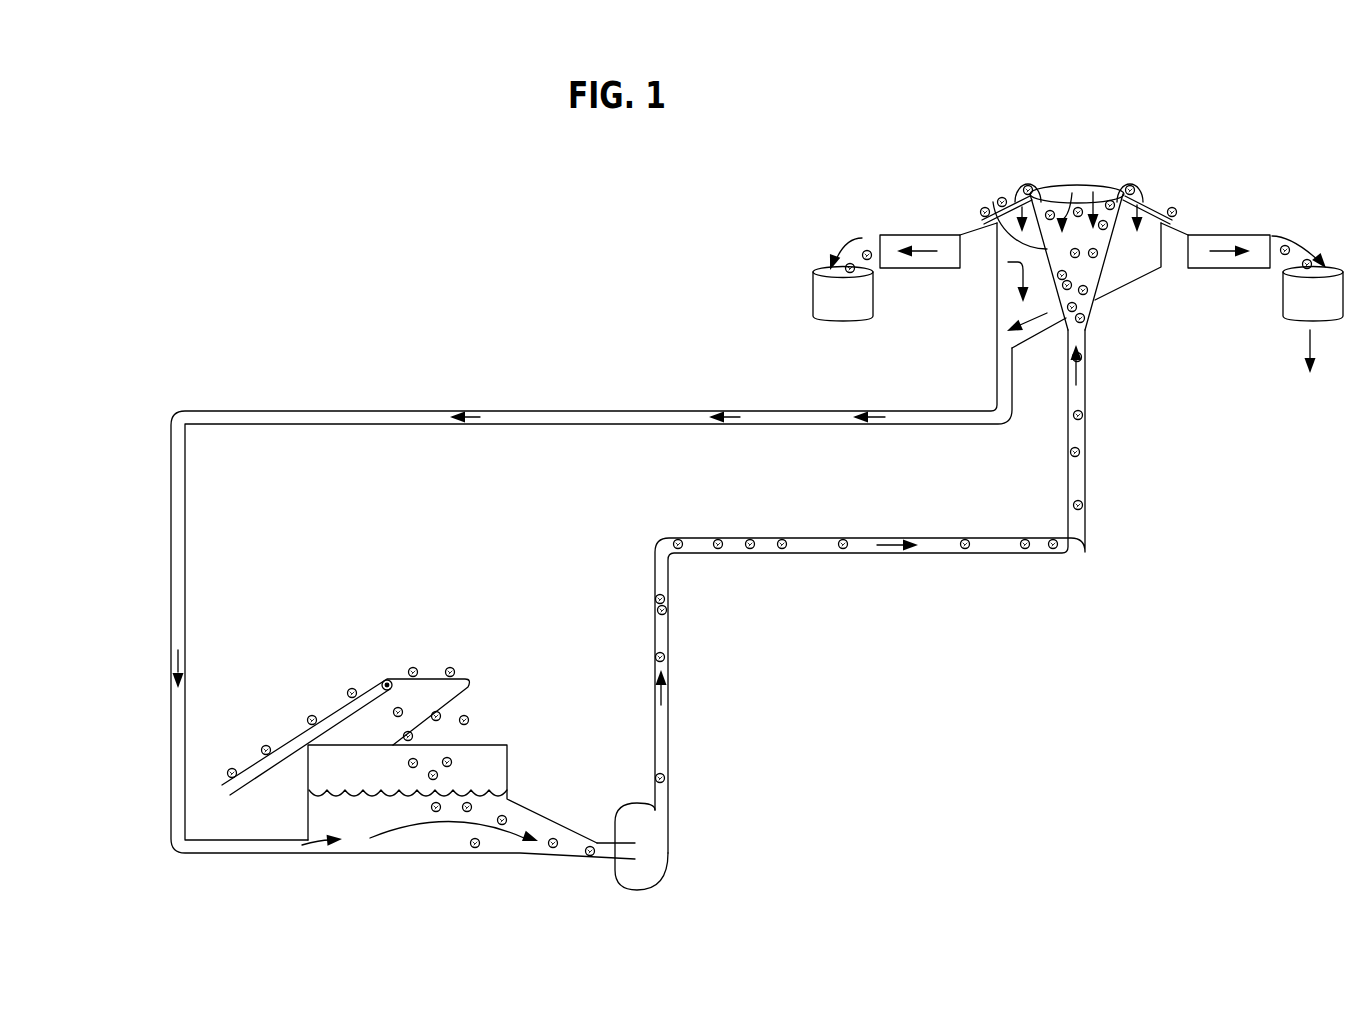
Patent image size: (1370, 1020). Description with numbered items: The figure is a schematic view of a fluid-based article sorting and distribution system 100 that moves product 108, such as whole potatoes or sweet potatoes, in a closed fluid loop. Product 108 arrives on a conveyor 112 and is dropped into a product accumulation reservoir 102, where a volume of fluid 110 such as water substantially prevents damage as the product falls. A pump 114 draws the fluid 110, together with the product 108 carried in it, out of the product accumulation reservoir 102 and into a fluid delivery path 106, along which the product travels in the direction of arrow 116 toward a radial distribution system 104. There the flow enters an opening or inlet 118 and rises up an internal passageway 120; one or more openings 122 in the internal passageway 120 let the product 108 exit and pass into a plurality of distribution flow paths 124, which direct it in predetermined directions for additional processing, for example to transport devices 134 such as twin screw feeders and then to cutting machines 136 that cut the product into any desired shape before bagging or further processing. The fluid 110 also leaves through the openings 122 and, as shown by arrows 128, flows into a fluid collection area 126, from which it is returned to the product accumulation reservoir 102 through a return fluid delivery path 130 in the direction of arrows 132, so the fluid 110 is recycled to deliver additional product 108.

The fluid-based article sorting and distribution system 100 is at (338, 322).
The product accumulation reservoir 102 is at (510, 797).
The radial distribution system 104 is at (1108, 150).
The fluid delivery path 106 is at (862, 548).
The product 108 is at (783, 537).
The fluid 110 is at (368, 831).
The conveyor 112 is at (465, 655).
The pump 114 is at (653, 840).
The arrow 116 is at (893, 537).
The opening (inlet) 118 is at (1090, 340).
The internal passageway 120 is at (1015, 203).
The openings 122 is at (1047, 197).
The distribution flow paths 124 is at (1160, 205).
The fluid collection area 126 is at (1156, 271).
The arrows 128 is at (1030, 183).
The return fluid delivery path 130 is at (594, 410).
The arrows 132 is at (185, 414).
The transport devices 134 is at (890, 235).
The cutting machines 136 is at (830, 270).